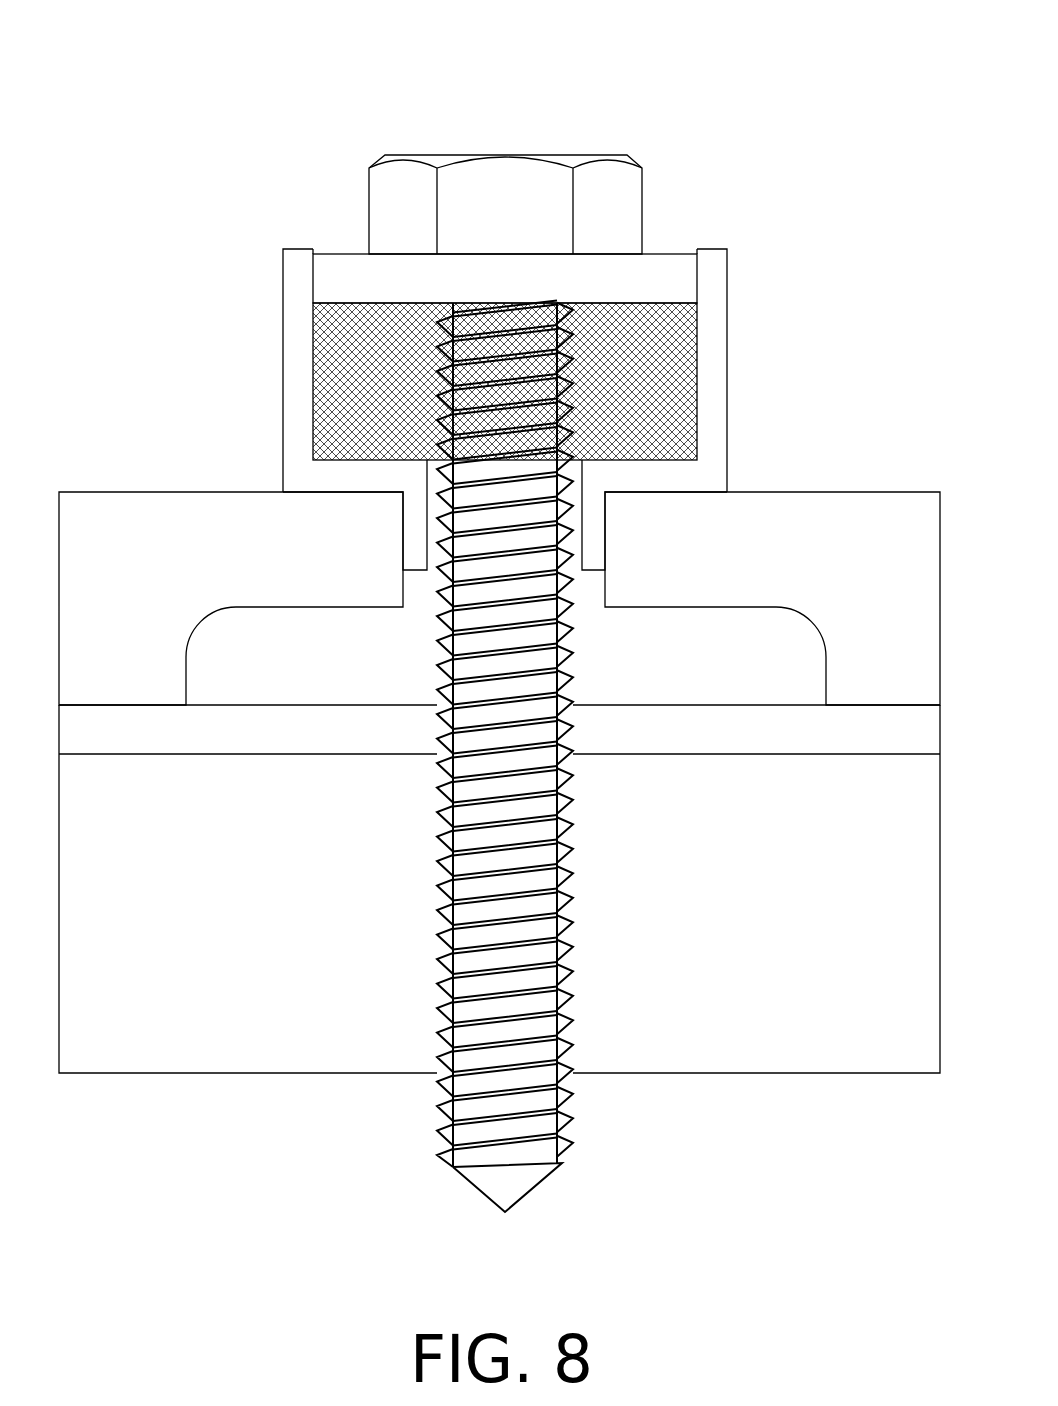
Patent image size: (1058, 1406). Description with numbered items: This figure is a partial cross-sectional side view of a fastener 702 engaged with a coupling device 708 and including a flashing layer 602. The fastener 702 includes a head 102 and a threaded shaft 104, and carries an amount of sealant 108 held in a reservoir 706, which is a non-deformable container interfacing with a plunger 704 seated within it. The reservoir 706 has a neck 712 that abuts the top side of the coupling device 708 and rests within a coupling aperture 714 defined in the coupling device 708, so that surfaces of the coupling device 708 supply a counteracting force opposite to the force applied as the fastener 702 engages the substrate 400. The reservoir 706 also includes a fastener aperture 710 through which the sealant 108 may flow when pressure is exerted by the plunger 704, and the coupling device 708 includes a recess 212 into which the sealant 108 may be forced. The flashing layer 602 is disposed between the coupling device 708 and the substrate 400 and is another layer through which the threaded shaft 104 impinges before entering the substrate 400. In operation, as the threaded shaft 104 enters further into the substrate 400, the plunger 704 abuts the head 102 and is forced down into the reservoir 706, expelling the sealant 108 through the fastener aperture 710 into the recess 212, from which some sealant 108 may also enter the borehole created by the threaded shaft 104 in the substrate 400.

The fastener 702 is at (505, 632).
The head 102 is at (510, 215).
The plunger 704 is at (662, 275).
The reservoir 706 is at (298, 368).
The sealant 108 is at (383, 362).
The neck 712 is at (403, 478).
The coupling aperture 714 is at (405, 593).
The coupling device 708 is at (158, 492).
The threaded shaft 104 is at (570, 1118).
The recess 212 is at (297, 656).
The flashing layer 602 is at (228, 727).
The substrate 400 is at (160, 940).
The fastener aperture 710 is at (575, 550).